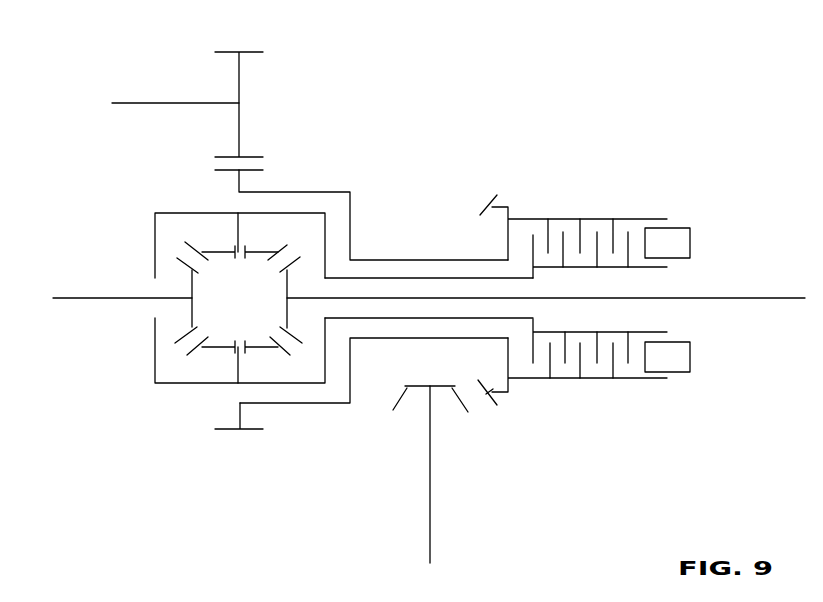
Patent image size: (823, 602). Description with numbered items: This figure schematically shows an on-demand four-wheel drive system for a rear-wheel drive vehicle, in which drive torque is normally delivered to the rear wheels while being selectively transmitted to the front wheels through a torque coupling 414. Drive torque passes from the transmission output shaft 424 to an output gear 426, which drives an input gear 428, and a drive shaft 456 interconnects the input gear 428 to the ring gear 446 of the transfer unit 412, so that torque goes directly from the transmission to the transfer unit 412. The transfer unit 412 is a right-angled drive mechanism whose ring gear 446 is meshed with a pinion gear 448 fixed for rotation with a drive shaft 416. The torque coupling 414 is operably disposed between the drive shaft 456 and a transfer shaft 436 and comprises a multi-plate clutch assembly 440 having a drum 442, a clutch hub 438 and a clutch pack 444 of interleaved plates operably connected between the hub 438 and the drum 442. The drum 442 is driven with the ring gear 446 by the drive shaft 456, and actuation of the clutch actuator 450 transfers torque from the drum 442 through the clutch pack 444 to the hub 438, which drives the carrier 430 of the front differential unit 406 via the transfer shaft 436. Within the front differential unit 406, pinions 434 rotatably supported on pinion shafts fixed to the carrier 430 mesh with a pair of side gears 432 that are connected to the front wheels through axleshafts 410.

The front differential unit 406 is at (158, 404).
The axleshafts 410 is at (85, 298).
The transfer unit 412 is at (490, 423).
The torque coupling 414 is at (745, 165).
The drive shaft 416 is at (430, 533).
The transmission output shaft 424 is at (135, 103).
The output gear 426 is at (228, 52).
The input gear 428 is at (248, 431).
The carrier 430 is at (231, 282).
The side gears 432 is at (285, 318).
The pinions 434 is at (248, 251).
The transfer shaft 436 is at (378, 277).
The clutch hub 438 is at (580, 268).
The clutch assembly 440 is at (636, 204).
The drum 442 is at (597, 380).
The clutch pack 444 is at (585, 234).
The ring gear 446 is at (490, 206).
The pinion gear 448 is at (425, 386).
The clutch actuator 450 is at (708, 239).
The drive shaft 456 is at (437, 338).